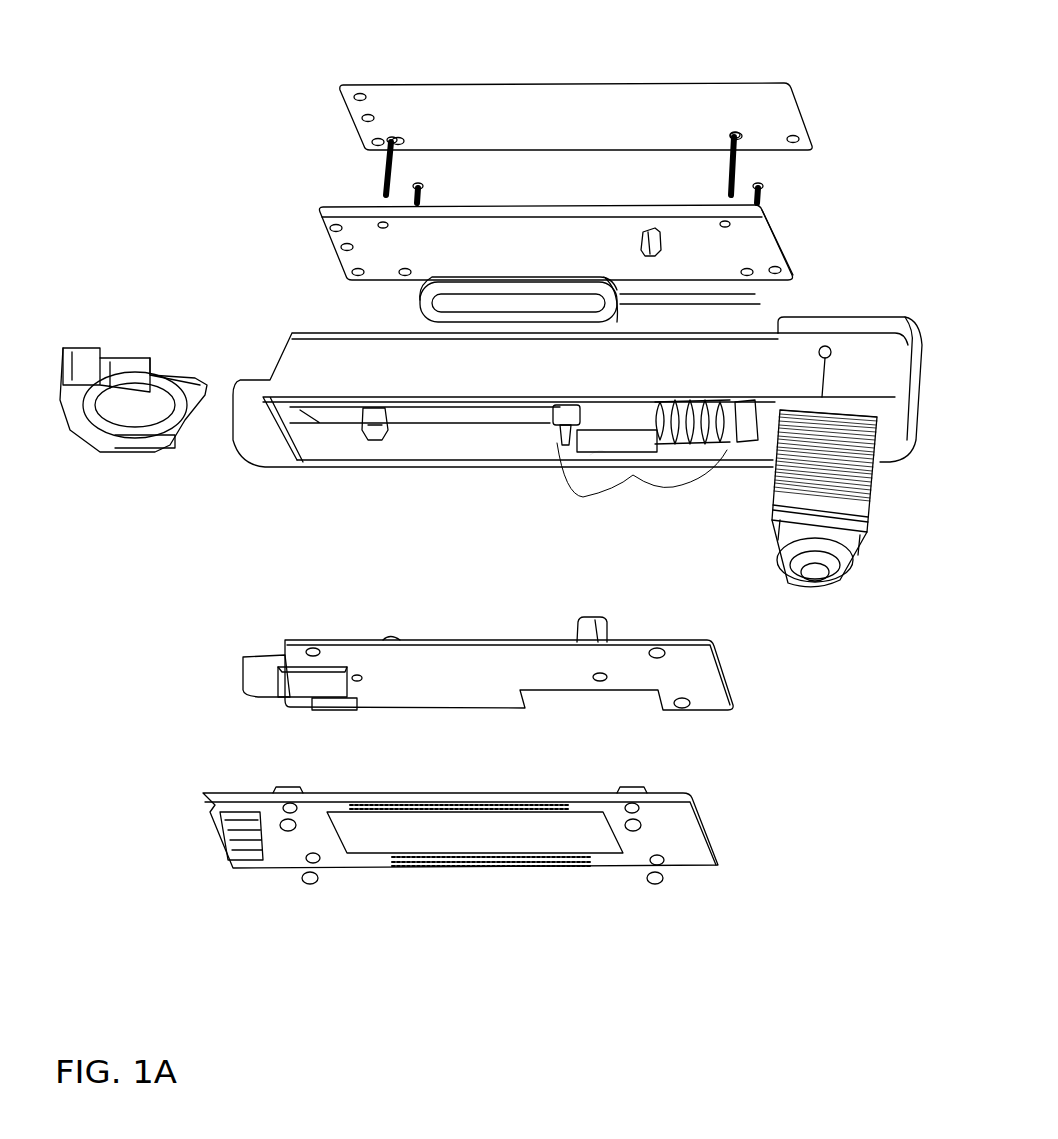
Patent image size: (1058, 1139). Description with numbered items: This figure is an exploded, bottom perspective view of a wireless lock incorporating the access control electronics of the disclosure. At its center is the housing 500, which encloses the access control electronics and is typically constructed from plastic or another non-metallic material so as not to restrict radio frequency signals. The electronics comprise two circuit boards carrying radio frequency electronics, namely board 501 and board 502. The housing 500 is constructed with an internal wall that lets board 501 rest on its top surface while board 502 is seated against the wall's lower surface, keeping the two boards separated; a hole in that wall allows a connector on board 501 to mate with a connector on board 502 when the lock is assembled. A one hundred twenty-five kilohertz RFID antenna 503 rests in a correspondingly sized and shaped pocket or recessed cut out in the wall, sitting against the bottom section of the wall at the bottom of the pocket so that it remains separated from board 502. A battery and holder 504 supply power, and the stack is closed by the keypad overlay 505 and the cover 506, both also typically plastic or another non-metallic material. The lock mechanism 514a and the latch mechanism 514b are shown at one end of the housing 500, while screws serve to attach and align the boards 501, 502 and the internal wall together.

The housing 500 is at (280, 335).
The circuit board 501 is at (778, 235).
The circuit board 502 is at (727, 678).
The 125 KHz RFID antenna 503 is at (416, 297).
The battery and holder 504 is at (131, 458).
The keypad overlay 505 is at (638, 82).
The cover 506 is at (593, 872).
The lock mechanism 514a is at (877, 487).
The latch mechanism 514b is at (635, 477).